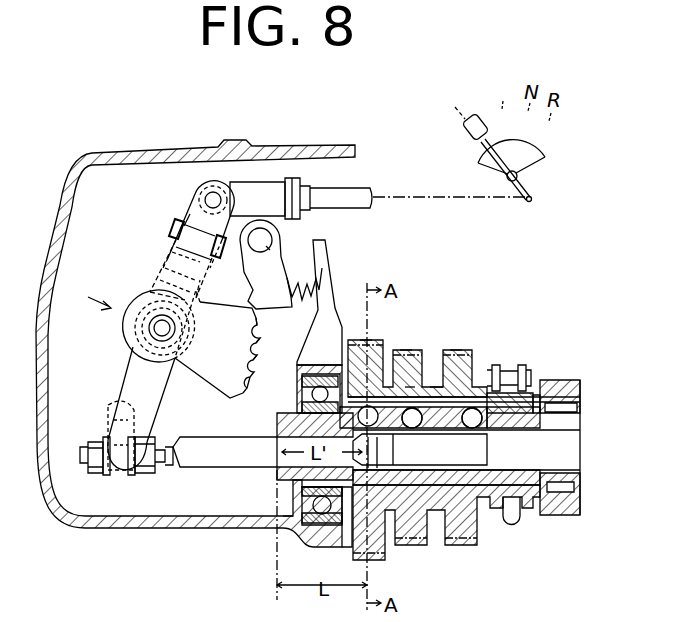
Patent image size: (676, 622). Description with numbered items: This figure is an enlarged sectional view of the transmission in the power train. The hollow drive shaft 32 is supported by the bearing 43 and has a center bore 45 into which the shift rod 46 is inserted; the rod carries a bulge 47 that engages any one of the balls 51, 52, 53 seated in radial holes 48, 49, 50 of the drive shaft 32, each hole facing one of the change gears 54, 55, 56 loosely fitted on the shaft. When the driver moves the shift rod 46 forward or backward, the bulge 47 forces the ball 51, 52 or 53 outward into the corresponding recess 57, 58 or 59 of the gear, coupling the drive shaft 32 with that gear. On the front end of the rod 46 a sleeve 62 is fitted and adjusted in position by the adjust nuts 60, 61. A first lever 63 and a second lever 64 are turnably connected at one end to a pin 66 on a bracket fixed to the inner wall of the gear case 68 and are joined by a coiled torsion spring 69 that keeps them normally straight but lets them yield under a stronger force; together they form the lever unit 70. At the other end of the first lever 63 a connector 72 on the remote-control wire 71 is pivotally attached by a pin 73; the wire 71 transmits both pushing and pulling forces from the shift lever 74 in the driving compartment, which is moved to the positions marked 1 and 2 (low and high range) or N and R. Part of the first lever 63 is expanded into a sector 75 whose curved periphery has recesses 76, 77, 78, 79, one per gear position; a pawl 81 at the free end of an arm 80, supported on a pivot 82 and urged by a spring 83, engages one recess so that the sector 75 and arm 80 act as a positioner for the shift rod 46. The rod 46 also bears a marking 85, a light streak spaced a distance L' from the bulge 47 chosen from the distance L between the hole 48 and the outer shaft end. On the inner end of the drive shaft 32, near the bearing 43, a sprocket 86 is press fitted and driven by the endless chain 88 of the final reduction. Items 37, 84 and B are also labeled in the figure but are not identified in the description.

The low range position marking 1 is at (456, 104).
The high range position marking 2 is at (499, 93).
The drive shaft 32 is at (478, 500).
The bearing 37 is at (323, 514).
The bearing 43 is at (560, 495).
The center bore 45 is at (575, 470).
The shift rod 46 is at (208, 468).
The bulge 47 is at (380, 540).
The hole 48 is at (390, 428).
The hole 49 is at (415, 428).
The hole 50 is at (480, 428).
The ball 51 is at (370, 392).
The ball 52 is at (412, 405).
The ball 53 is at (478, 410).
The change gear 54 is at (372, 339).
The change gear 55 is at (408, 350).
The change gear 56 is at (460, 395).
The recess 57 is at (328, 365).
The recess 58 is at (438, 400).
The recess 59 is at (520, 366).
The adjust nut 60 is at (96, 474).
The adjust nut 61 is at (150, 475).
The sleeve 62 is at (118, 476).
The first lever 63 is at (190, 210).
The second lever 64 is at (133, 378).
The pin 66 is at (150, 330).
The gear case 68 is at (255, 529).
The coiled torsion spring 69 is at (172, 252).
The lever unit 70 is at (176, 220).
The remote-control wire 71 is at (354, 195).
The connector 72 is at (272, 182).
The pin 73 is at (212, 182).
The shift lever 74 is at (484, 141).
The sector 75 is at (203, 362).
The recess 76 is at (272, 283).
The recess 77 is at (260, 346).
The recess 78 is at (255, 366).
The recess 79 is at (248, 389).
The arm 80 is at (268, 249).
The pawl 81 is at (262, 326).
The pivot 82 is at (266, 237).
The spring 83 is at (305, 280).
The clevis 84 is at (112, 409).
The marking 85 is at (280, 460).
The sprocket 86 is at (513, 525).
The endless chain 88 is at (542, 370).
The shift lever assembly B is at (88, 297).